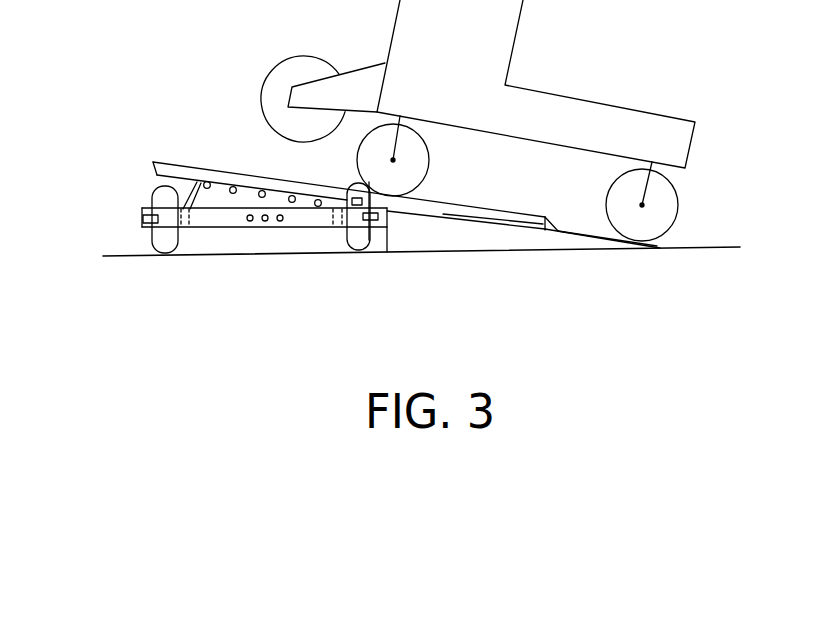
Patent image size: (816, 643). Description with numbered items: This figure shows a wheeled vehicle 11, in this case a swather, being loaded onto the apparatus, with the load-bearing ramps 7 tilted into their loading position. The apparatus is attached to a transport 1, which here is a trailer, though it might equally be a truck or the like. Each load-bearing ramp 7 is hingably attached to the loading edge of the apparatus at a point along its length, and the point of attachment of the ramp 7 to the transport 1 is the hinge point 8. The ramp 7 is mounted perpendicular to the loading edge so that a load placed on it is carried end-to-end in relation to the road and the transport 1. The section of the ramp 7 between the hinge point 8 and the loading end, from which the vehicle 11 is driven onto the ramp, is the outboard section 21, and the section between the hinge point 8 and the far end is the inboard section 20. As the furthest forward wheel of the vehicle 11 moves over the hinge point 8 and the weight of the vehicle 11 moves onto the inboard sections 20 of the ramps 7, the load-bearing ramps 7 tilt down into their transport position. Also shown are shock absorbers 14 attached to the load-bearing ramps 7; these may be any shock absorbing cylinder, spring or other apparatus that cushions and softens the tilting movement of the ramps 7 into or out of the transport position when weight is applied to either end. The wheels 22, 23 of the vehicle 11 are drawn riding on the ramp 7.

The transport 1 is at (133, 215).
The load-bearing ramp 7 is at (201, 141).
The hinge point 8 is at (356, 198).
The wheeled vehicle 11 is at (587, 63).
The shock absorber 14 is at (195, 182).
The inboard section 20 is at (368, 272).
The outboard section 21 is at (657, 270).
The front wheel 22 is at (393, 160).
The rear wheel 23 is at (642, 205).